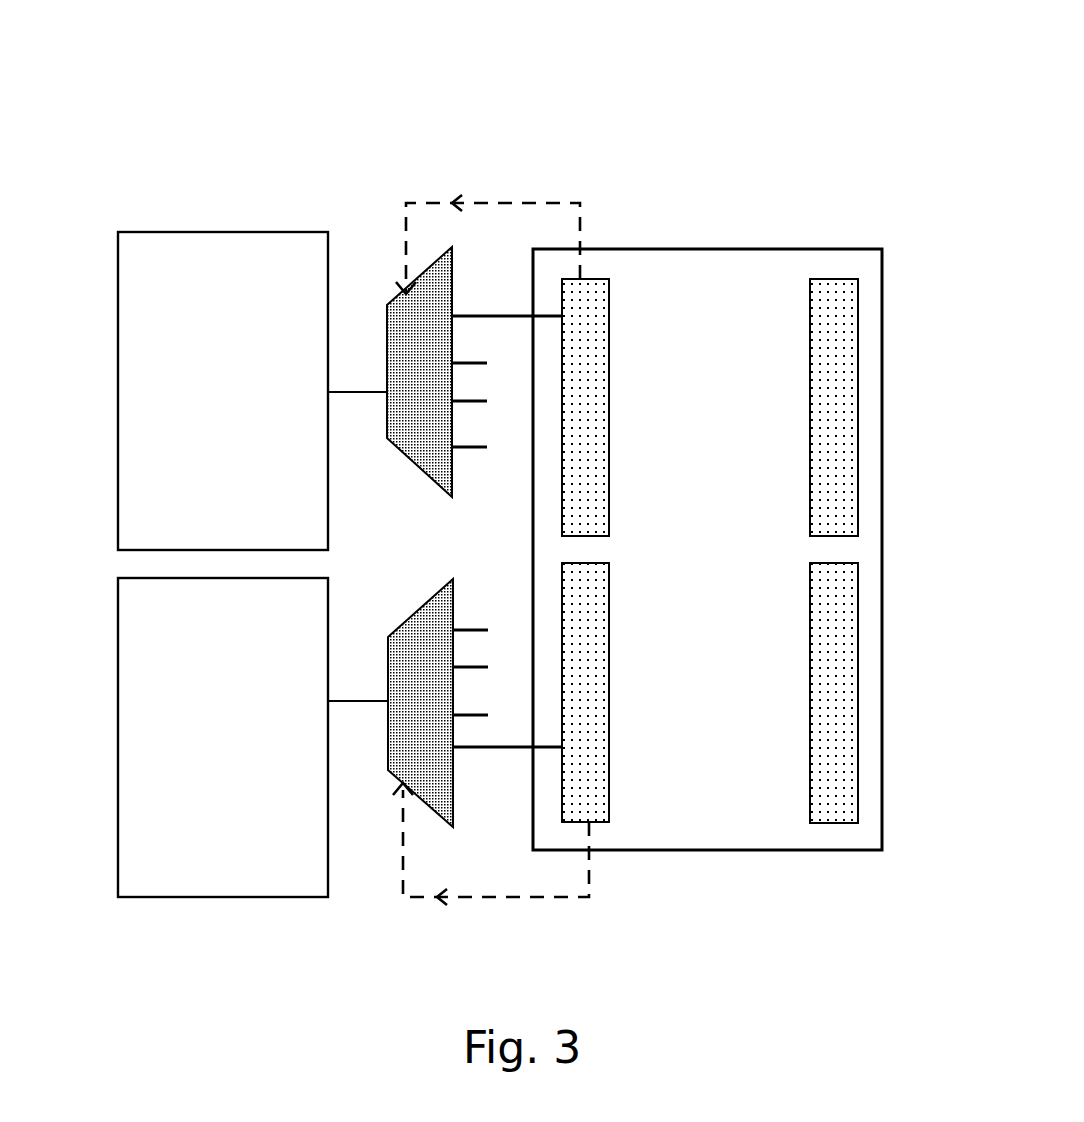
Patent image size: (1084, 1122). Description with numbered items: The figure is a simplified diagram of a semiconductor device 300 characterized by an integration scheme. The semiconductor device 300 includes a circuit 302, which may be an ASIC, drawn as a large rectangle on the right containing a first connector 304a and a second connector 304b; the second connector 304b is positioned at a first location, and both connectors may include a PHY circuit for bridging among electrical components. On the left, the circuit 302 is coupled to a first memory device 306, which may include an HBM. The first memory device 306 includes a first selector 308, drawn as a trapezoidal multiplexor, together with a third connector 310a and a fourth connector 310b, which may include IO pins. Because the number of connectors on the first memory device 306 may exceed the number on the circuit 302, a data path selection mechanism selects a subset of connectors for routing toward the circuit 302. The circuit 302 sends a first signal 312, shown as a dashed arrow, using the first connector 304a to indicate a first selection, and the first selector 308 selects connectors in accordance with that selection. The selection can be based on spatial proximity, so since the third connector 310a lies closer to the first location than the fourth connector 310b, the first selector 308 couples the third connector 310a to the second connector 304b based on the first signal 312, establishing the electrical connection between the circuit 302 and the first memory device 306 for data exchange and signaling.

The semiconductor device 300 is at (686, 96).
The circuit 302 is at (739, 827).
The first connector 304a is at (587, 278).
The second connector 304b is at (573, 318).
The first memory device 306 is at (168, 282).
The first selector 308 is at (408, 354).
The third connector 310a is at (514, 316).
The fourth connector 310b is at (468, 450).
The first signal 312 is at (540, 202).